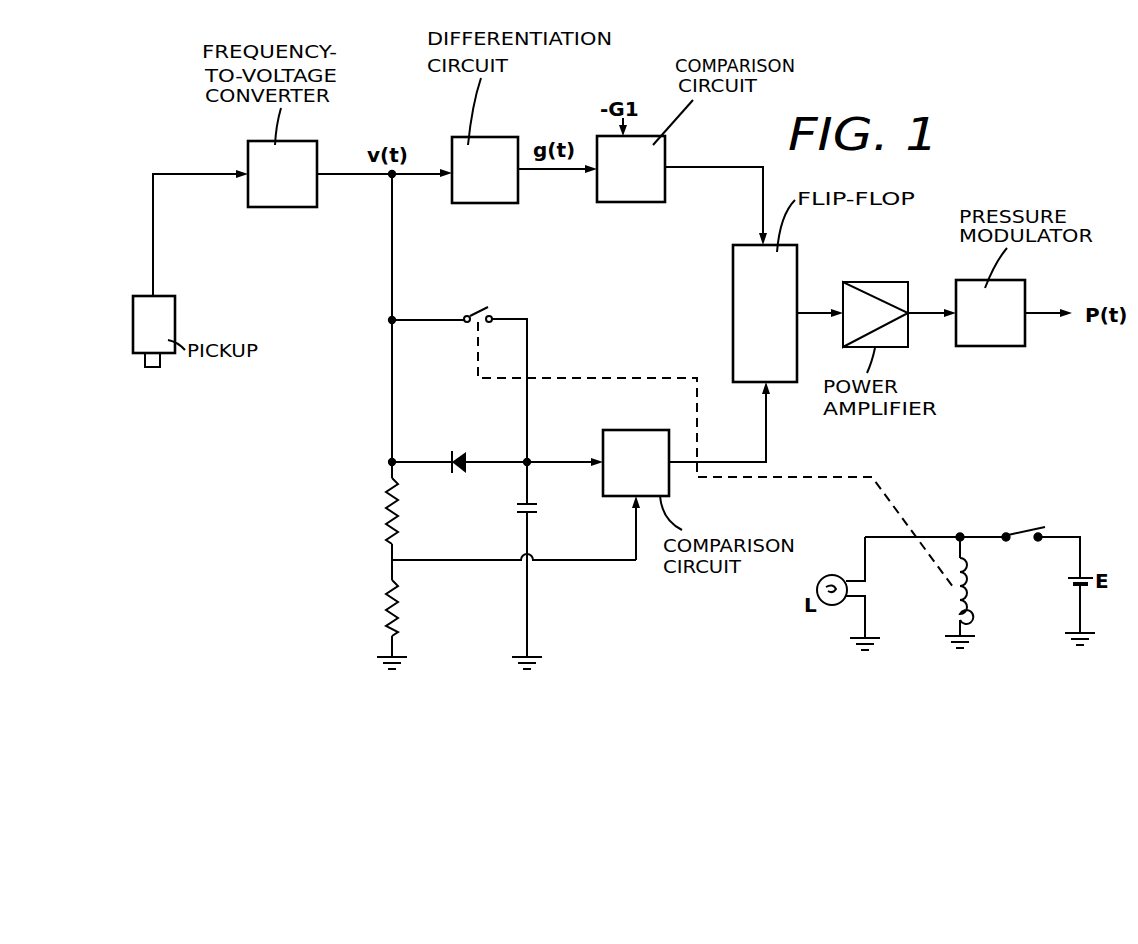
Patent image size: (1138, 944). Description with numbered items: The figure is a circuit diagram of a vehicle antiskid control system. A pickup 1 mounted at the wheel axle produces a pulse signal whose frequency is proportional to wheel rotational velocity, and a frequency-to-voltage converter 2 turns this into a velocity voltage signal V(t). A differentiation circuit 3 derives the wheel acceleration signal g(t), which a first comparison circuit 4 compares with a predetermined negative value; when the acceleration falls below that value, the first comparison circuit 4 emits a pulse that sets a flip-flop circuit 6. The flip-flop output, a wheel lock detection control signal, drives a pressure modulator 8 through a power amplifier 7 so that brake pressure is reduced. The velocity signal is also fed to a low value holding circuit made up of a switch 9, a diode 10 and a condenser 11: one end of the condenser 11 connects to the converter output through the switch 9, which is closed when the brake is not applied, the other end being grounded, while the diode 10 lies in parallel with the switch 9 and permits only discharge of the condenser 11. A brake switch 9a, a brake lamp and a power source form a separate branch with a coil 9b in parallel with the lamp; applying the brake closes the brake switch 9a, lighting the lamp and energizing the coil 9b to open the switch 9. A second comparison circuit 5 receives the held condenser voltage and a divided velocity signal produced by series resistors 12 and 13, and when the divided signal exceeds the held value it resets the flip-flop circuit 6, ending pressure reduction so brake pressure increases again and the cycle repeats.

The pickup 1 is at (154, 331).
The frequency-to-voltage converter 2 is at (282, 174).
The differentiation circuit 3 is at (485, 170).
The first comparison circuit 4 is at (631, 169).
The second comparison circuit 5 is at (636, 463).
The flip-flop circuit 6 is at (723, 302).
The power amplifier 7 is at (866, 278).
The pressure modulator 8 is at (990, 313).
The switch 9 is at (484, 297).
The brake switch 9a is at (1025, 527).
The coil 9b is at (967, 580).
The diode 10 is at (462, 444).
The condenser 11 is at (549, 508).
The resistor 12 is at (378, 515).
The resistor 13 is at (378, 596).